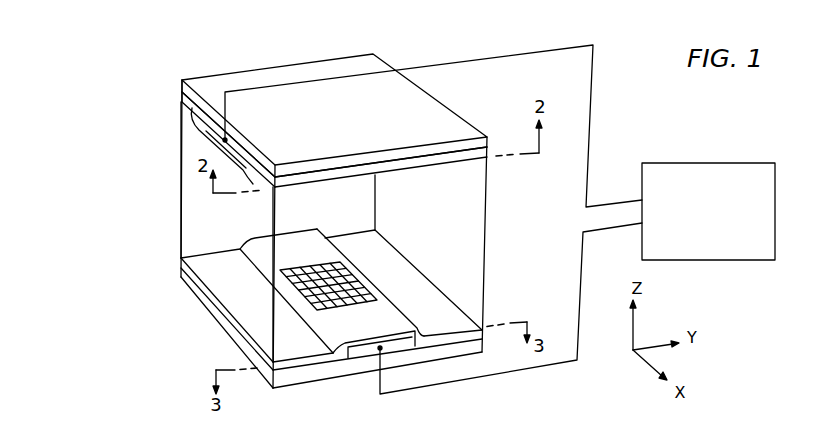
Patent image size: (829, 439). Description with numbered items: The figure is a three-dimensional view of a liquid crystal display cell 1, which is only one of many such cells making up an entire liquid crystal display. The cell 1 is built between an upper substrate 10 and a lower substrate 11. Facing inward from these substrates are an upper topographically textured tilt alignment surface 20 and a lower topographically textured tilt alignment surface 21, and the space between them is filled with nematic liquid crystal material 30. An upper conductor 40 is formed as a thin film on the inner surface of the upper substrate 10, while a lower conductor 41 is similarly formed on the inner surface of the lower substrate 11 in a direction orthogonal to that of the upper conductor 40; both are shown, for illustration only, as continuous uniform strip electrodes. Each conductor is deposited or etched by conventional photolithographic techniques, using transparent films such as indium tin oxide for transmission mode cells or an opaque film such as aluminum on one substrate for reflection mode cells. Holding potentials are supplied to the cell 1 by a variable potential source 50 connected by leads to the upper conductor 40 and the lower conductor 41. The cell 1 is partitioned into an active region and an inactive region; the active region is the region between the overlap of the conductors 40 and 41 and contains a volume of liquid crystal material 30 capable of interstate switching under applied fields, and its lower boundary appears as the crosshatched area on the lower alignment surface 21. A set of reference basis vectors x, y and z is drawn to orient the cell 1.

The liquid crystal display cell 1 is at (134, 90).
The upper substrate 10 is at (182, 81).
The lower substrate 11 is at (213, 312).
The upper topographically textured tilt alignment surface 20 is at (190, 104).
The lower topographically textured tilt alignment surface 21 is at (193, 276).
The nematic liquid crystal material 30 is at (188, 215).
The upper conductor 40 is at (206, 134).
The lower conductor 41 is at (358, 352).
The variable potential source 50 is at (706, 163).